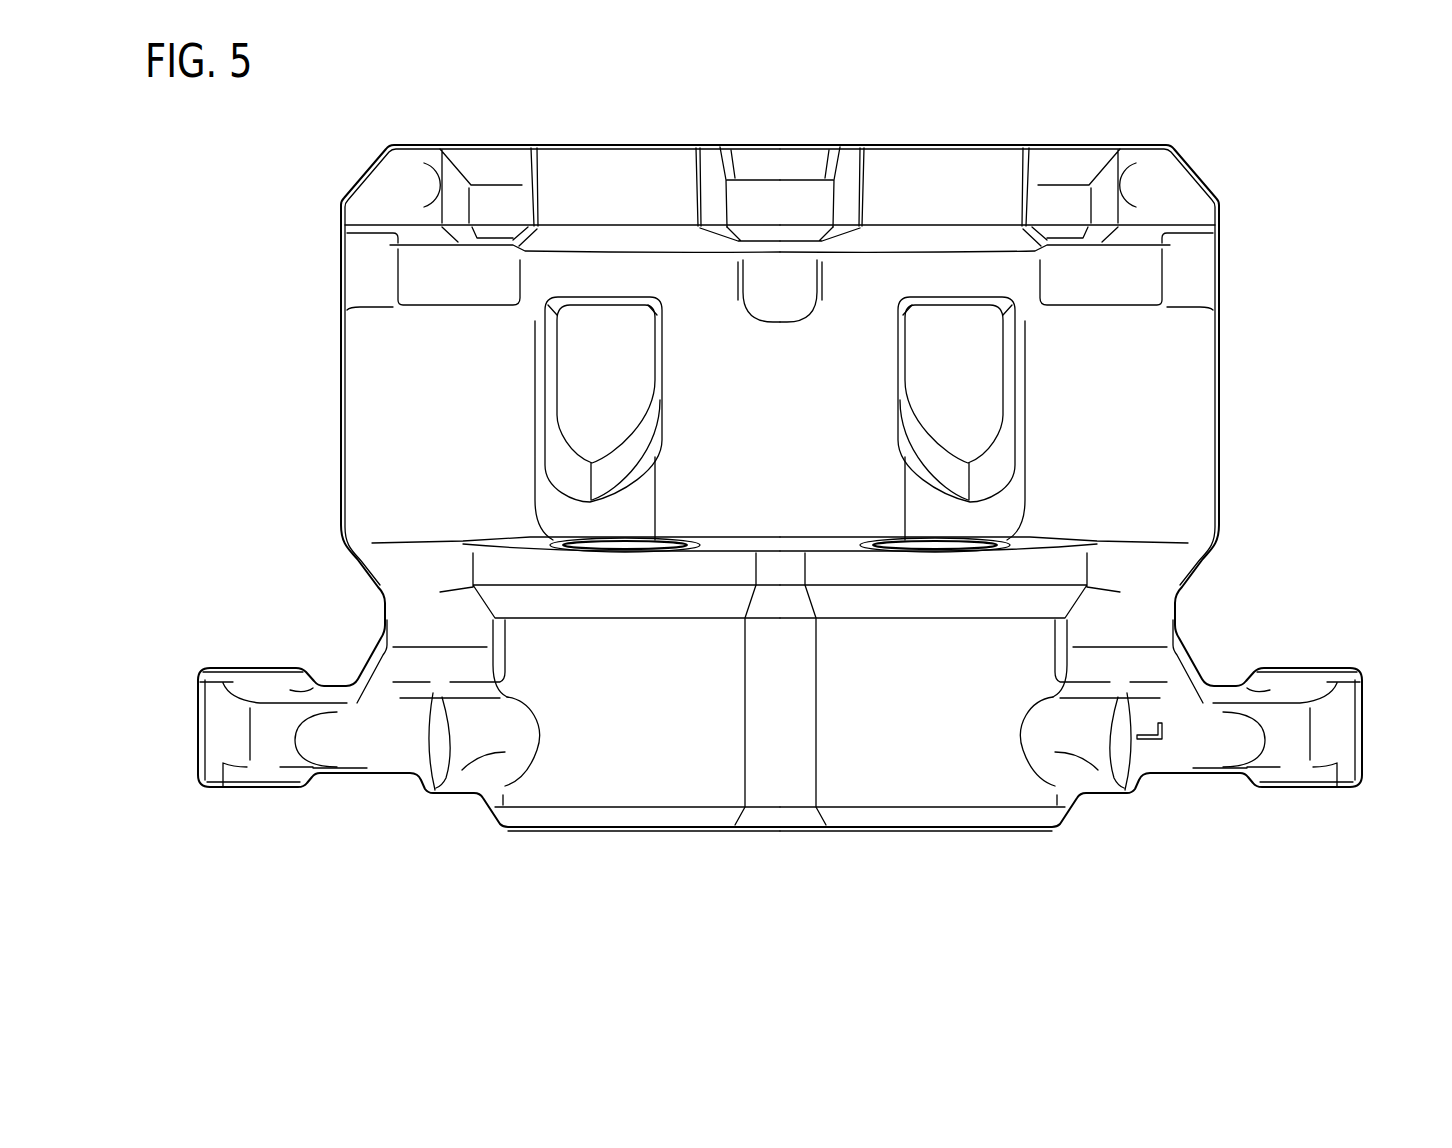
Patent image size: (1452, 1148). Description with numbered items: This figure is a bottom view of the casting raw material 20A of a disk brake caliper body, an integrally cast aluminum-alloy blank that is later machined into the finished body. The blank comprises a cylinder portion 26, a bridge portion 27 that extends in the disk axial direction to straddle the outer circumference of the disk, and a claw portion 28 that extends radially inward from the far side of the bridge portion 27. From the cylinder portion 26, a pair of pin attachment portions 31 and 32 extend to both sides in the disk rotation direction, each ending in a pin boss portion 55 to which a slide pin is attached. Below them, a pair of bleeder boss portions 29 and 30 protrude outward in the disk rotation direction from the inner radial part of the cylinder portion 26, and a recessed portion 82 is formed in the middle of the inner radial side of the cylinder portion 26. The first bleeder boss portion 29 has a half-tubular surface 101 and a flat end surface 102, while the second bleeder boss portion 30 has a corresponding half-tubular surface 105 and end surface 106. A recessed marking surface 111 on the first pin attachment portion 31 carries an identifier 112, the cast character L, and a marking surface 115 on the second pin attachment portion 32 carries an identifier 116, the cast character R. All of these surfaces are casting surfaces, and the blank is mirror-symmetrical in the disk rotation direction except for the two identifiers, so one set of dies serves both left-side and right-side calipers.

The casting raw material 20A is at (272, 864).
The cylinder portion 26 is at (710, 782).
The bridge portion 27 is at (372, 387).
The claw portion 28 is at (627, 170).
The first bleeder boss portion 29 is at (1092, 760).
The second bleeder boss portion 30 is at (473, 767).
The first pin attachment portion 31 is at (1297, 767).
The second pin attachment portion 32 is at (216, 768).
The pin boss portion 55 is at (1333, 733).
The recessed portion 82 is at (780, 740).
The half-tubular surface 101 is at (1033, 760).
The end surface 102 is at (1127, 760).
The half-tubular surface 105 is at (500, 752).
The end surface 106 is at (438, 752).
The marking surface 111 is at (1192, 743).
The identifier 112 is at (1160, 720).
The marking surface 115 is at (373, 742).
The identifier 116 is at (410, 722).